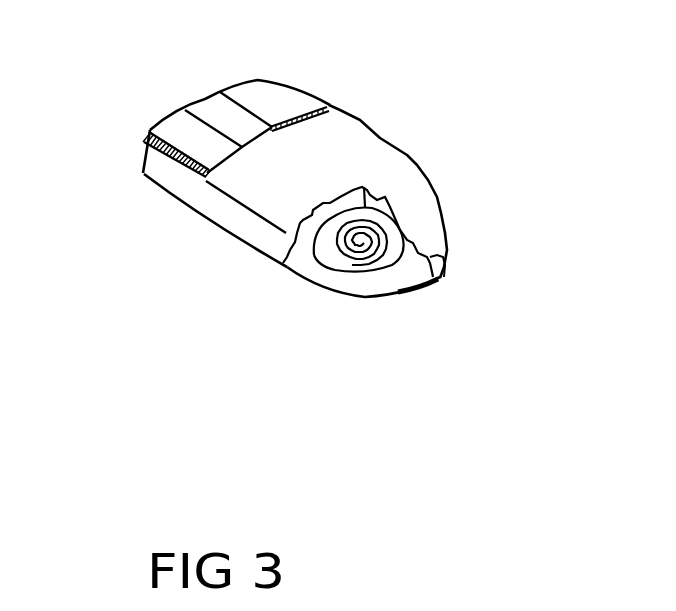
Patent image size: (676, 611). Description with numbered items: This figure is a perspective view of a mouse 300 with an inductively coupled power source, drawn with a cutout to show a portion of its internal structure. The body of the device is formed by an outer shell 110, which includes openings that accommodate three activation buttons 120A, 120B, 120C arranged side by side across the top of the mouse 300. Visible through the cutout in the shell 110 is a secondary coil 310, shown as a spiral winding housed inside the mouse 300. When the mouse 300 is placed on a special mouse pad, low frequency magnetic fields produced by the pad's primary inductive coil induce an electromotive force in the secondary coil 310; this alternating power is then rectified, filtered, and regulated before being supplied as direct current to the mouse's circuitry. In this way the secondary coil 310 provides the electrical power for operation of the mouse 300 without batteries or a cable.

The mouse 300 is at (283, 65).
The outer shell 110 is at (207, 216).
The activation button 120A is at (172, 131).
The activation button 120B is at (210, 107).
The activation button 120C is at (243, 90).
The secondary coil 310 is at (350, 265).